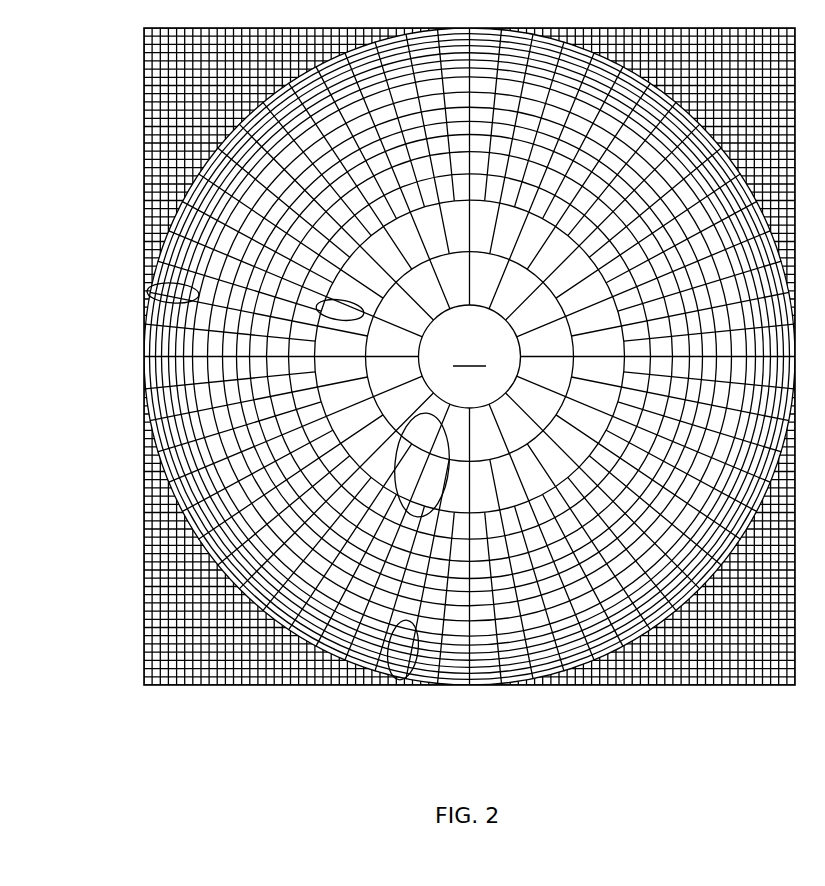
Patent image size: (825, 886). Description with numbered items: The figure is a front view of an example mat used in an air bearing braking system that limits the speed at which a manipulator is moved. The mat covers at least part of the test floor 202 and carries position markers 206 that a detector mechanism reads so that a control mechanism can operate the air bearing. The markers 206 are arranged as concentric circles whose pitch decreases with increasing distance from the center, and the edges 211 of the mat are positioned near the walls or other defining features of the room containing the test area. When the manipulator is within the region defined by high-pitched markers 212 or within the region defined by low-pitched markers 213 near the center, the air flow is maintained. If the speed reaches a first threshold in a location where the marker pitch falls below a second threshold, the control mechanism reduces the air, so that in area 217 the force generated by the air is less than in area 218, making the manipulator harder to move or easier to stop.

The test floor 202 is at (175, 125).
The position markers 206 is at (215, 437).
The edges 211 is at (150, 354).
The high-pitched markers 212 is at (157, 291).
The low-pitched markers 213 is at (313, 310).
The area 217 is at (405, 678).
The area 218 is at (412, 508).